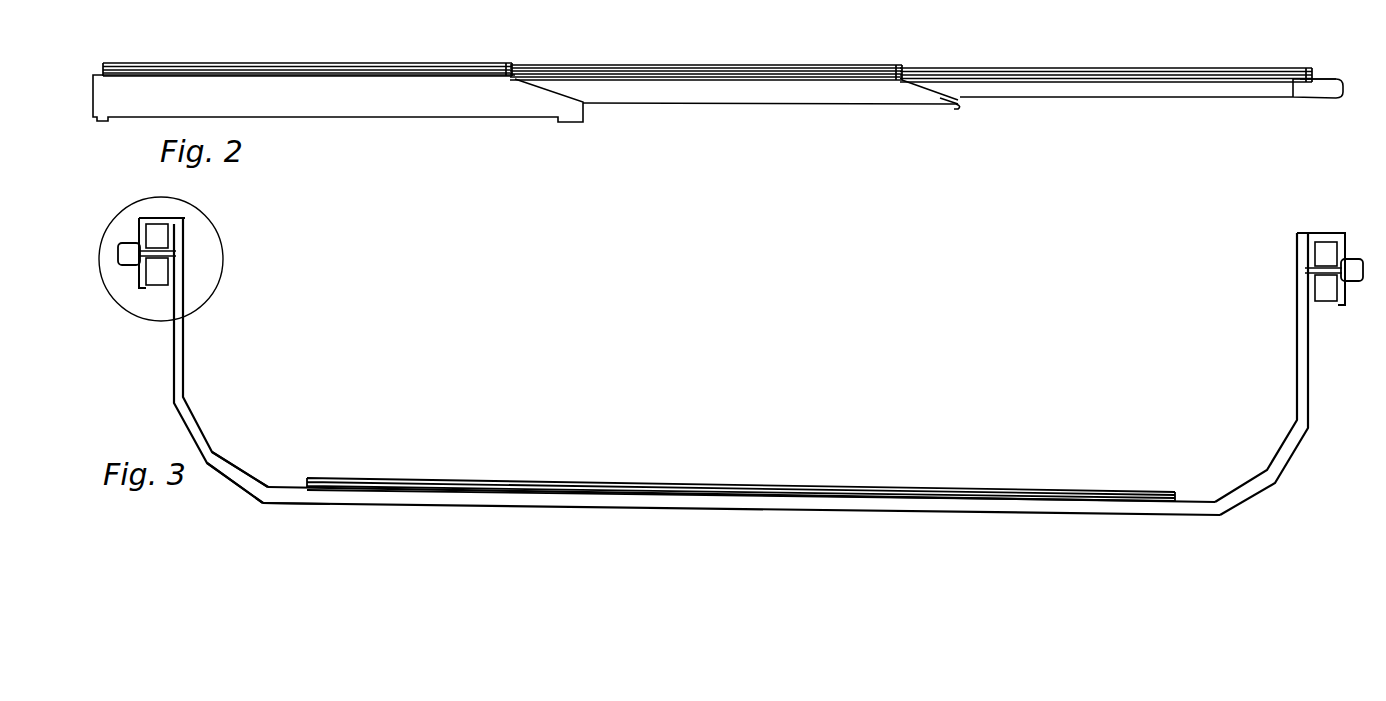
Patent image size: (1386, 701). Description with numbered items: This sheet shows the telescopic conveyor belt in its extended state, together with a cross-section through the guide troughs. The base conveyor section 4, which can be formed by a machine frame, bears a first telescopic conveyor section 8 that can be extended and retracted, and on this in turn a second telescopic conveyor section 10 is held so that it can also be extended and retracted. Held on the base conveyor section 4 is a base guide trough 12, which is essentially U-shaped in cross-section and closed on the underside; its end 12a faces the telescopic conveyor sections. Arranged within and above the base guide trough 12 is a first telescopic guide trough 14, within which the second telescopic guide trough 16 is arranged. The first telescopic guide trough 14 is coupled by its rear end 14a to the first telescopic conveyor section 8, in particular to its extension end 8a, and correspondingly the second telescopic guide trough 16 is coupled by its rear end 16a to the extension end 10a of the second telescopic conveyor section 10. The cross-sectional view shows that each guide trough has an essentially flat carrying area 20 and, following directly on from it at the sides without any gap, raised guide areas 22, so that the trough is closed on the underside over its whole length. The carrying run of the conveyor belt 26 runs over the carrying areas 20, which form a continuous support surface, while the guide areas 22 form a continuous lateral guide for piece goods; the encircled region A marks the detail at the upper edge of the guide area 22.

In FIG. 2, the base conveyor section 4 is at (410, 102).
In FIG. 2, the first telescopic conveyor section 8 is at (777, 97).
In FIG. 2, the extension end of first telescopic conveyor section 8a is at (924, 119).
In FIG. 2, the second telescopic conveyor section 10 is at (1103, 88).
In FIG. 2, the extension end of second telescopic conveyor section 10a is at (1316, 113).
In FIG. 2, the base guide trough 12 is at (283, 62).
In FIG. 3, the base guide trough 12 is at (291, 512).
In FIG. 2, the end of base guide trough 12a is at (515, 52).
In FIG. 2, the first telescopic guide trough 14 is at (680, 63).
In FIG. 3, the first telescopic guide trough 14 is at (256, 456).
In FIG. 2, the rear end of first telescopic guide trough 14a is at (909, 57).
In FIG. 2, the second telescopic guide trough 16 is at (1103, 67).
In FIG. 2, the rear end of second telescopic guide trough 16a is at (1309, 61).
In FIG. 3, the carrying area 20 is at (503, 495).
In FIG. 3, the raised guide area 22 is at (185, 362).
In FIG. 3, the conveyor belt 26 is at (597, 482).
In FIG. 3, the detail A is at (223, 265).